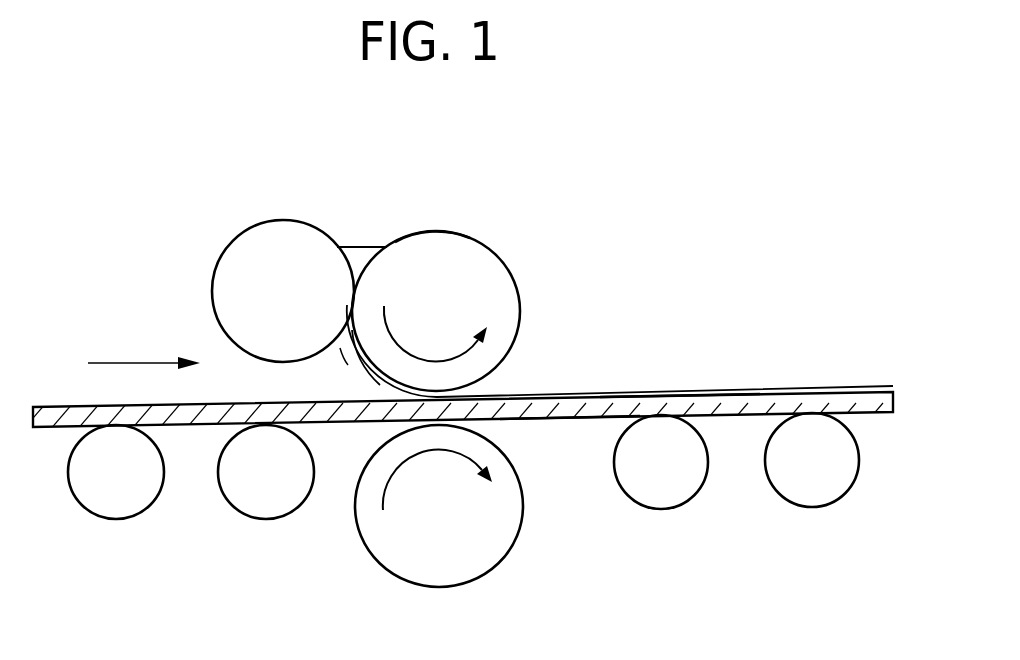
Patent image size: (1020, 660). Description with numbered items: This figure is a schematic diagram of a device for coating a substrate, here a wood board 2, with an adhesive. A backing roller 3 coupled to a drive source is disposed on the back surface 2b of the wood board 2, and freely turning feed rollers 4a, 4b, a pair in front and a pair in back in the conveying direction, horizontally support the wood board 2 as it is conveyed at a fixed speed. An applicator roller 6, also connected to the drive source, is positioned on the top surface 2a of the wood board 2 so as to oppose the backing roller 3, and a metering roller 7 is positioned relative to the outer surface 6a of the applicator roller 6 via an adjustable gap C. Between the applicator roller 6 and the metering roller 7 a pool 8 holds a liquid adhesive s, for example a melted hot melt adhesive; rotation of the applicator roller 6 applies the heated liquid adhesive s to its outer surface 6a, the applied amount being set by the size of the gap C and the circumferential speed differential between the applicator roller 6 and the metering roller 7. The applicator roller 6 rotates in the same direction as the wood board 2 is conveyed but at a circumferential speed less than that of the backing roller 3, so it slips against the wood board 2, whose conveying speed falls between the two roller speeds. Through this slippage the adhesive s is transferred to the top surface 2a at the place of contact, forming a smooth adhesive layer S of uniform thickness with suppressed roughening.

The wood board 2 is at (872, 386).
The top surface 2a is at (683, 386).
The back surface 2b is at (577, 418).
The backing roller 3 is at (495, 567).
The feed rollers 4a is at (152, 502).
The feed rollers 4b is at (695, 495).
The applicator roller 6 is at (503, 263).
The outer surface 6a is at (412, 231).
The metering roller 7 is at (212, 283).
The pool 8 is at (358, 246).
The gap C is at (338, 345).
The adhesive layer S is at (798, 384).
The liquid adhesive s is at (362, 362).